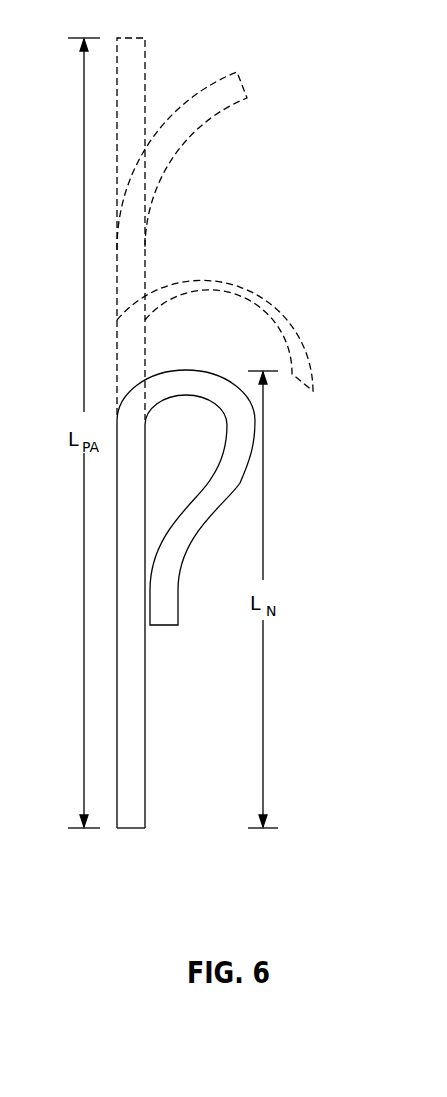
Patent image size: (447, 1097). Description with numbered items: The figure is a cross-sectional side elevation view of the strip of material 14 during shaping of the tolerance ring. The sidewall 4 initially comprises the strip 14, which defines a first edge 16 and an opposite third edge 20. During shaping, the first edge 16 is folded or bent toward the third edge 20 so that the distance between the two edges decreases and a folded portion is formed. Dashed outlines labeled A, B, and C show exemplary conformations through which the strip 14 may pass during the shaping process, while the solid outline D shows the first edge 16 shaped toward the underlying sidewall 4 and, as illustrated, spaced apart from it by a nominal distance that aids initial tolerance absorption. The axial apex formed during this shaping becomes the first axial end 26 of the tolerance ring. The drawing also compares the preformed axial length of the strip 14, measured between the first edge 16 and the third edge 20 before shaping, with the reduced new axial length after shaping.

The sidewall 4 is at (223, 435).
The strip of material 14 is at (128, 763).
The first edge 16 is at (128, 38).
The third edge 20 is at (128, 829).
The first axial end 26 is at (183, 370).